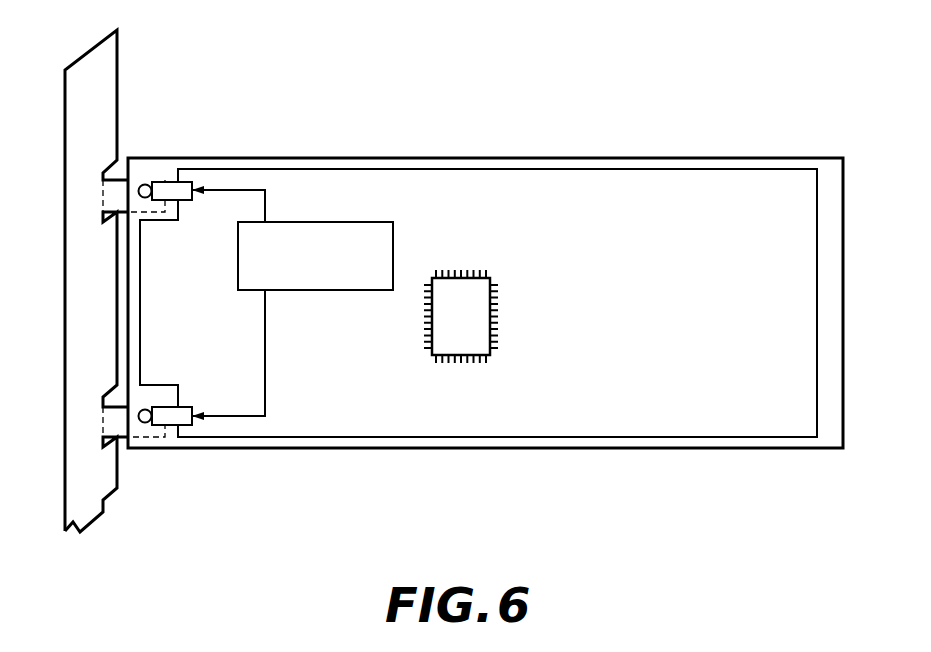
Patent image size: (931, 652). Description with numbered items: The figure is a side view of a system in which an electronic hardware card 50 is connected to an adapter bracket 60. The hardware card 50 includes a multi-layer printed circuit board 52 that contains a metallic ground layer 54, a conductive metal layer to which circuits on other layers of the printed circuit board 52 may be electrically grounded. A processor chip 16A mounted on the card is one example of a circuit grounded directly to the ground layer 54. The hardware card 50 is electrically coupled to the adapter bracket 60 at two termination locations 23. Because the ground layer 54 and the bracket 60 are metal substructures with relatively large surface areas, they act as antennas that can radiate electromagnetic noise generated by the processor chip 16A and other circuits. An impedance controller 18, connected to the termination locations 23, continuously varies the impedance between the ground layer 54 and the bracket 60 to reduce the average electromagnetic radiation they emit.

The adapter bracket 60 is at (118, 53).
The electronic hardware card 50 is at (485, 242).
The multi-layer printed circuit board 52 is at (498, 158).
The ground layer 54 is at (608, 168).
The termination locations 23 is at (168, 187).
The impedance controller 18 is at (342, 222).
The processor chip 16A is at (483, 312).